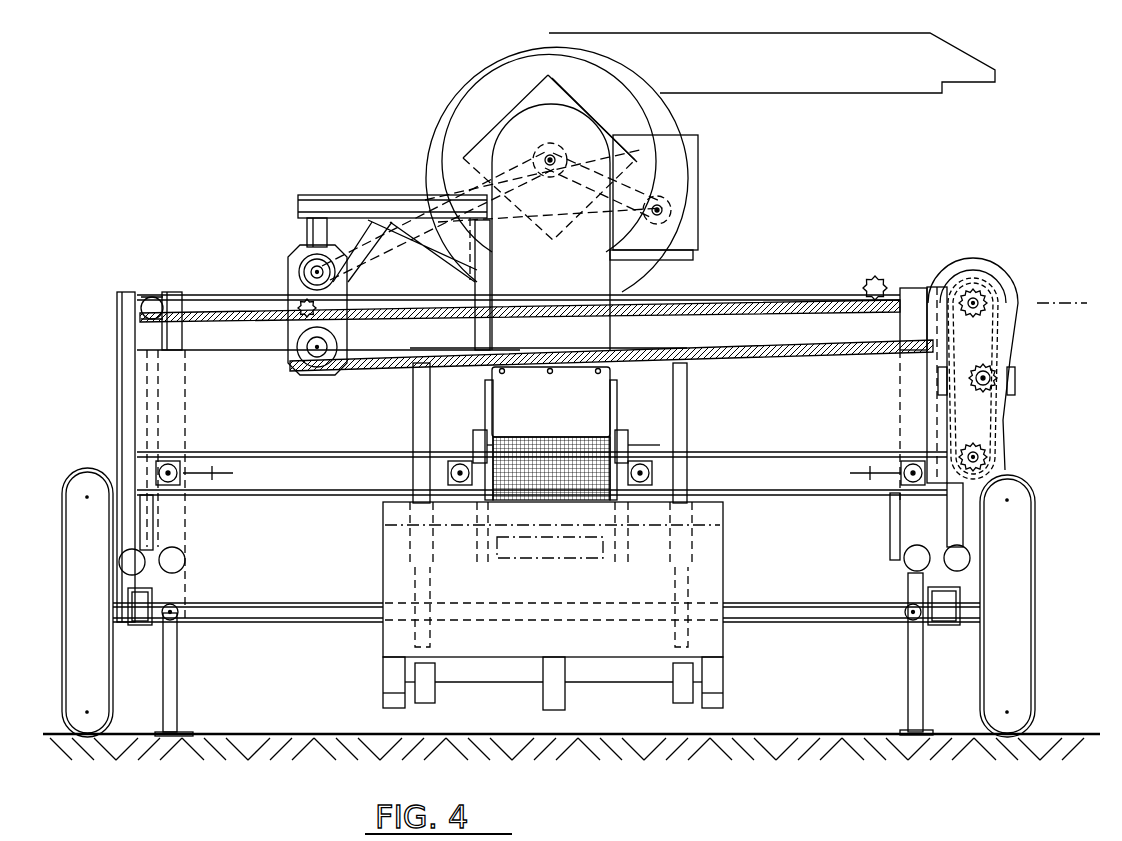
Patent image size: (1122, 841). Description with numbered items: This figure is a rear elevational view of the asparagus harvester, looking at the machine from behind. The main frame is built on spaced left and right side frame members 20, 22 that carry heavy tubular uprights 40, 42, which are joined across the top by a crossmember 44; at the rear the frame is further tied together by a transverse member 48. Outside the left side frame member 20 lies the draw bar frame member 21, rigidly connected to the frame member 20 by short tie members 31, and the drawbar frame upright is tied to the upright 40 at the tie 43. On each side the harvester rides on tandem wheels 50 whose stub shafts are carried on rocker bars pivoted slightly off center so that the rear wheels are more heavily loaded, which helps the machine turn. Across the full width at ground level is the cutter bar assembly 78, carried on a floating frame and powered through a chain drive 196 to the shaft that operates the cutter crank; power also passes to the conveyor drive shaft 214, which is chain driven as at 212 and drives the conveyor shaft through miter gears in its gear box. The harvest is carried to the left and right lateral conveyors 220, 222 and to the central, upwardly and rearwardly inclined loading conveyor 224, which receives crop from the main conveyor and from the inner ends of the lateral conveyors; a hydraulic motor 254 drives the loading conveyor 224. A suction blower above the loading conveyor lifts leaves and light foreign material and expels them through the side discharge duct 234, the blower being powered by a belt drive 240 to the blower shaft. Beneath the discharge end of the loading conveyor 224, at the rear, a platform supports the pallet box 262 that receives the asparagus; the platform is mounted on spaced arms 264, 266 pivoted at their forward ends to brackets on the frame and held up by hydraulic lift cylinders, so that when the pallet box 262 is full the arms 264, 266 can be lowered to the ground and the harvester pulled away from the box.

The left side frame member 20 is at (175, 565).
The draw bar frame member 21 is at (127, 565).
The right side frame member 22 is at (908, 559).
The short tie member 31 is at (145, 548).
The tubular upright 40 is at (183, 340).
The tubular upright 42 is at (900, 333).
The tie 43 is at (150, 296).
The crossmember 44 is at (205, 297).
The transverse member 48 is at (805, 606).
The tandem wheels 50 is at (1019, 702).
The cutter bar assembly 78 is at (818, 733).
The chain drive 196 is at (938, 272).
The chain drive 212 is at (1003, 353).
The drive shaft 214 is at (1000, 441).
The lateral conveyor 220 is at (275, 483).
The lateral conveyor 222 is at (798, 490).
The loading conveyor 224 is at (580, 437).
The side discharge duct 234 is at (858, 82).
The belt drive 240 is at (379, 257).
The hydraulic motor 254 is at (627, 443).
The pallet box 262 is at (383, 635).
The arm 264 is at (436, 690).
The arm 266 is at (673, 698).